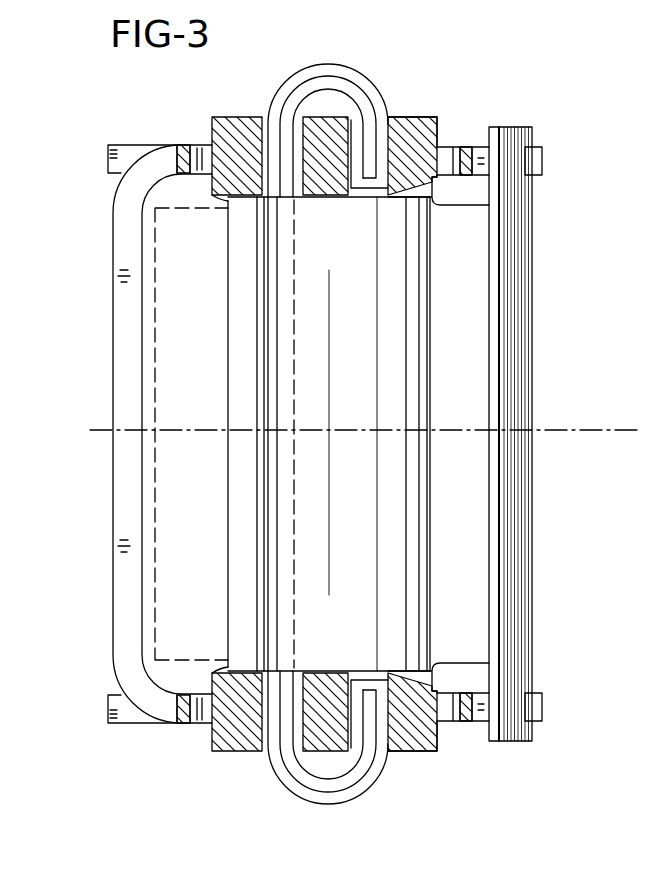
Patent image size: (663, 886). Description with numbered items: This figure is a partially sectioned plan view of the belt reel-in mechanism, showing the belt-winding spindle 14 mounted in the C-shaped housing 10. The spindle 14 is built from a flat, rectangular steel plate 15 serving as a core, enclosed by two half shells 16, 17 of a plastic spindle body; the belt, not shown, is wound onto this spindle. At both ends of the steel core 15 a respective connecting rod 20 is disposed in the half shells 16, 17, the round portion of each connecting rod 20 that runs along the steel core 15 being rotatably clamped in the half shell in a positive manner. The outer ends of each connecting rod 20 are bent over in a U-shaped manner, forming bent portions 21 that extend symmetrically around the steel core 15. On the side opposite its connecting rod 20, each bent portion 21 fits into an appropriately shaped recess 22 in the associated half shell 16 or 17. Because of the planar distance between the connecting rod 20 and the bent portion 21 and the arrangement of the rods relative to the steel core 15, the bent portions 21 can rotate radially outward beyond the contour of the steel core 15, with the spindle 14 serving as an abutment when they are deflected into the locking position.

The C-shaped housing 10 is at (118, 192).
The belt-winding spindle 14 is at (365, 323).
The flat rectangular steel plate 15 is at (345, 748).
The half shell 16 is at (430, 740).
The half shell 17 is at (240, 735).
The connecting rod 20 is at (268, 105).
The bent portion 21 is at (352, 94).
The recess 22 is at (407, 678).